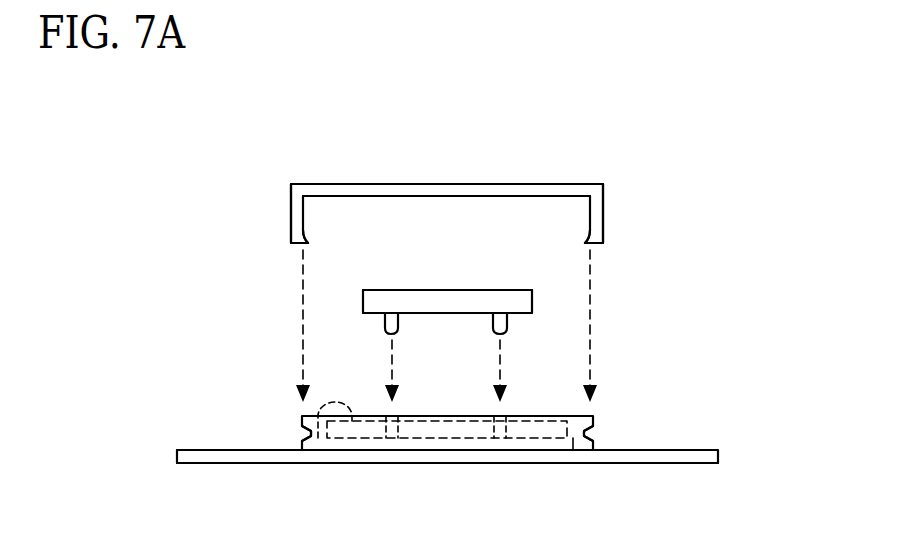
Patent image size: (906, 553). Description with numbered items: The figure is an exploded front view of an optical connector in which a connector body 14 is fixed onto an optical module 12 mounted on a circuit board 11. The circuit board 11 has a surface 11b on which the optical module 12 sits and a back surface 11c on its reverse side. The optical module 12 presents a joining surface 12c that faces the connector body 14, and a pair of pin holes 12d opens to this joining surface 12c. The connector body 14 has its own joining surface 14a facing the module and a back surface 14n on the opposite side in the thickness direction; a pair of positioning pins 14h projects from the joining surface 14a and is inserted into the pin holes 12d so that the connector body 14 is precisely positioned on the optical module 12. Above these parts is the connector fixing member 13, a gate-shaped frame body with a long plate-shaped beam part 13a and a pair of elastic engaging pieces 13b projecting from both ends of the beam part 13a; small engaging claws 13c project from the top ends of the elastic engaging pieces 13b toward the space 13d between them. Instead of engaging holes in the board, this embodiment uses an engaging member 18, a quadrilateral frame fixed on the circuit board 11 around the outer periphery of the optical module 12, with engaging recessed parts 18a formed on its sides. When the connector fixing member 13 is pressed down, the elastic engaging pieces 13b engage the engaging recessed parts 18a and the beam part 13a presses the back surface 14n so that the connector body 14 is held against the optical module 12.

The circuit board 11 is at (718, 456).
The surface 11b is at (197, 450).
The back surface 11c is at (203, 464).
The optical module 12 is at (545, 428).
The joining surface 12c is at (320, 440).
The pin holes 12d is at (392, 440).
The connector fixing member 13 is at (538, 186).
The beam part 13a is at (432, 183).
The elastic engaging pieces 13b is at (291, 212).
The engaging claws 13c is at (306, 243).
The space 13d is at (470, 239).
The connector body 14 is at (491, 289).
The back surface 14n is at (406, 289).
The joining surface 14a is at (430, 313).
The positioning pins 14h is at (383, 320).
The engaging member 18 is at (574, 440).
The engaging recessed parts 18a is at (302, 432).